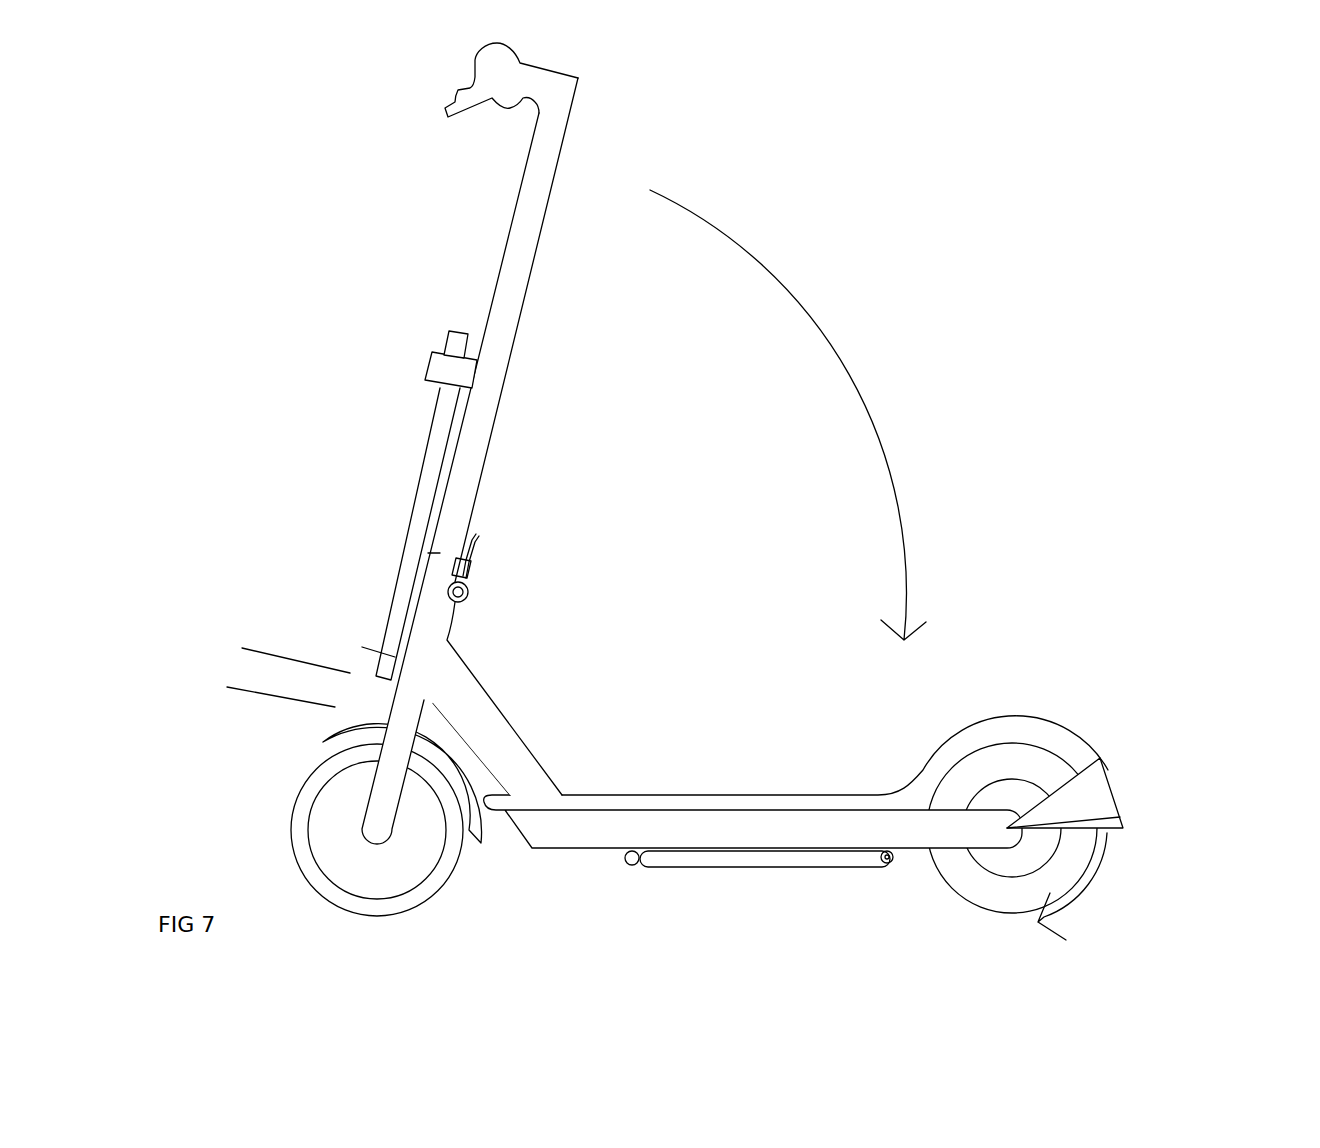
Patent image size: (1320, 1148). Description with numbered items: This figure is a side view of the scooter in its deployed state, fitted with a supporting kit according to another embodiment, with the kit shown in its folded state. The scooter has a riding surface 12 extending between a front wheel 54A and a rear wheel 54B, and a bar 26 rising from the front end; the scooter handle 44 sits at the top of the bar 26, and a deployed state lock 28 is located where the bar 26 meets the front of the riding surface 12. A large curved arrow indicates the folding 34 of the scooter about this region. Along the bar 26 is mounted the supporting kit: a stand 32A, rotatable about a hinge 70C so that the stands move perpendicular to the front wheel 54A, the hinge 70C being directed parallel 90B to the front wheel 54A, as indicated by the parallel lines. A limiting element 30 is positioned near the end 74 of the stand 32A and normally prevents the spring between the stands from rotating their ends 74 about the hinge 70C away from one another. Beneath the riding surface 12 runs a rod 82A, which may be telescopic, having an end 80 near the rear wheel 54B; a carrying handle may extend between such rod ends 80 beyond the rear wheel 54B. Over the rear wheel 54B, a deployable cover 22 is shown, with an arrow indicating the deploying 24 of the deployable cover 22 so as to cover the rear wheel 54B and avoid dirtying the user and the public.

The riding surface 12 is at (625, 803).
The deployable cover 22 is at (1100, 788).
The deploying of deployable cover 24 is at (1078, 900).
The bar 26 is at (487, 395).
The deployed state lock 28 is at (468, 586).
The limiting element 30 is at (440, 362).
The stand 32A is at (430, 462).
The folding of scooter 34 is at (840, 356).
The scooter handle 44 is at (487, 70).
The front wheel 54A is at (342, 808).
The rear wheel 54B is at (1073, 853).
The hinge 70C is at (362, 647).
The ends of stands 74 is at (458, 343).
The end of telescopic rods 80 is at (887, 851).
The rod 82A is at (697, 868).
The parallel relation 90B is at (245, 672).